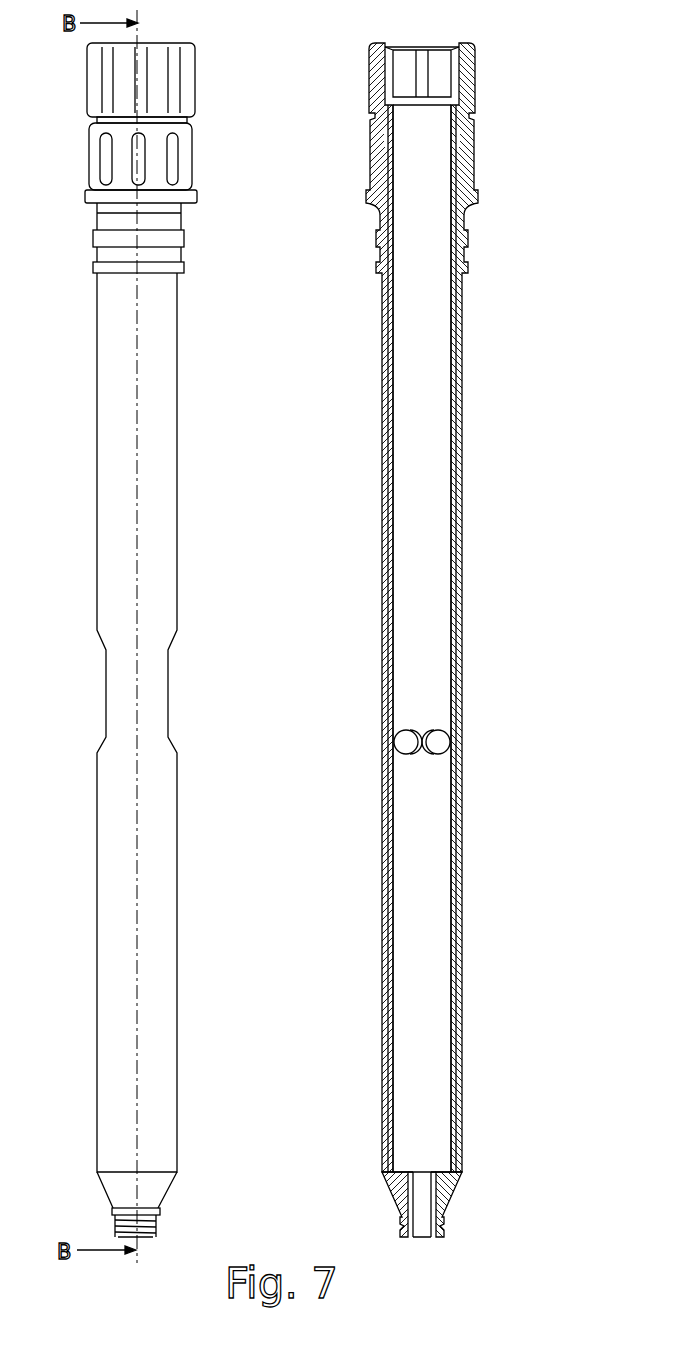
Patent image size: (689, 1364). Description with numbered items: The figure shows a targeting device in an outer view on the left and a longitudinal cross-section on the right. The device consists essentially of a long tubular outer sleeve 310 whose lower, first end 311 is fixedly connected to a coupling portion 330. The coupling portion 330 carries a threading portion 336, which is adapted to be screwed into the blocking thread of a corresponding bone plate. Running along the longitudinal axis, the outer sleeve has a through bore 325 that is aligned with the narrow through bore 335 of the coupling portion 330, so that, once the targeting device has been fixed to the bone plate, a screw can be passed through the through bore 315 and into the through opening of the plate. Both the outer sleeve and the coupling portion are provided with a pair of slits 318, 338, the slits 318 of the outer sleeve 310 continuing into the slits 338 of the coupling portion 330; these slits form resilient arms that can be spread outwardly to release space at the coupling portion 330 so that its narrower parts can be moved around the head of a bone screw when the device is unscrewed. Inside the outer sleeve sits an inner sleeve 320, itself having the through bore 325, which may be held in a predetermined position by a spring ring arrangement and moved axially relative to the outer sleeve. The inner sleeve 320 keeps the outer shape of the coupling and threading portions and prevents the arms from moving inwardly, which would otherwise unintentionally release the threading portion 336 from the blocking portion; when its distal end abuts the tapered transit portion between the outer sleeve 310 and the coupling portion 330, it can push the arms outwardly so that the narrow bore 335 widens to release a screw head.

The outer sleeve 310 is at (165, 578).
The first end of the outer sleeve 311 is at (482, 1158).
The through bore 315 is at (485, 638).
The through bore 325 is at (428, 452).
The inner sleeve 320 is at (440, 567).
The coupling portion 330 is at (86, 1172).
The through bore of the coupling portion 335 is at (147, 1244).
The threading portion 336 is at (157, 1227).
The slits of the outer sleeve 318 is at (470, 1229).
The slits of the coupling portion 338 is at (422, 1235).